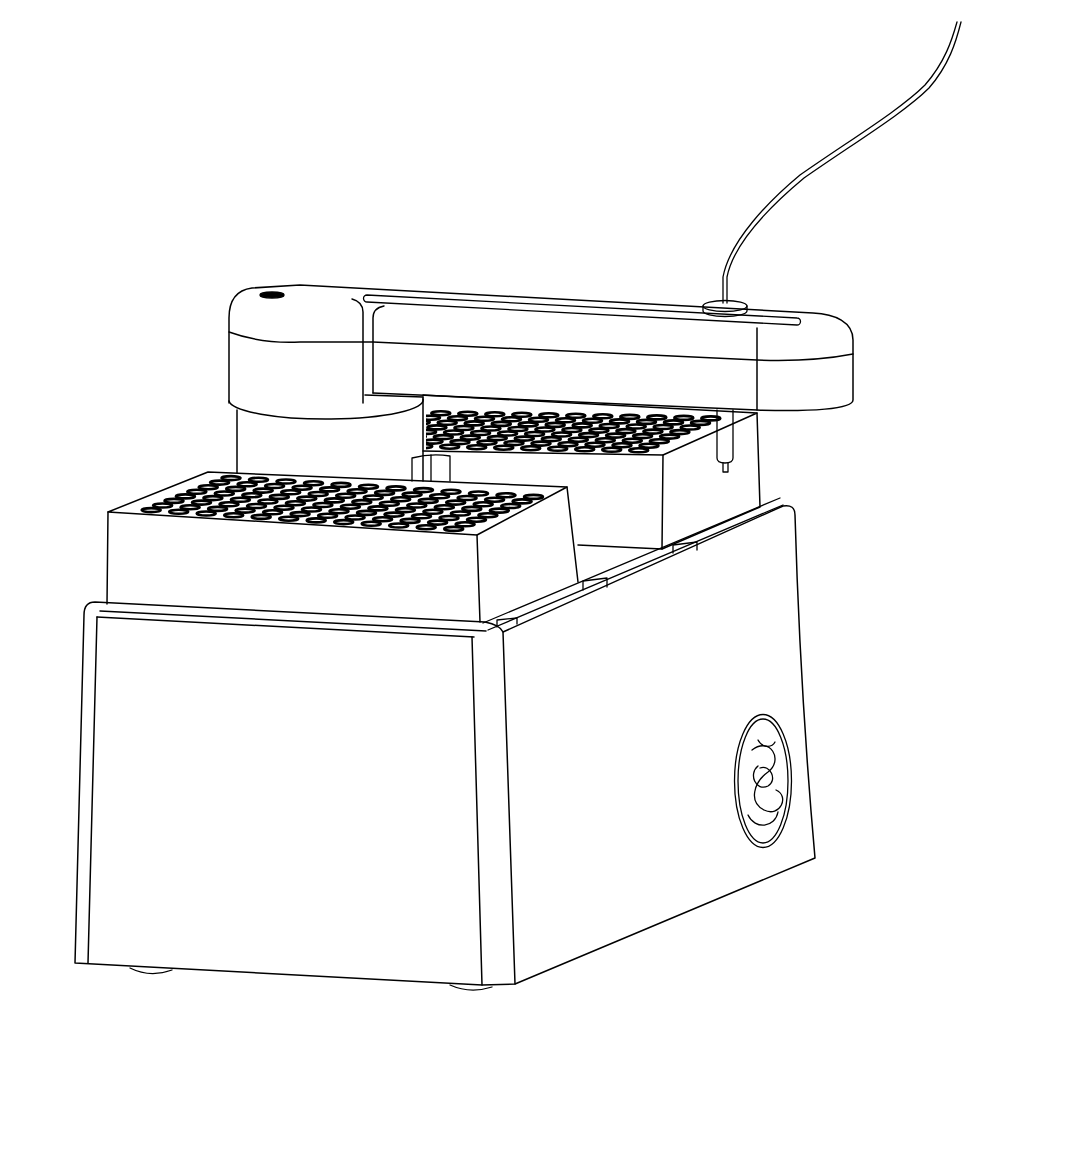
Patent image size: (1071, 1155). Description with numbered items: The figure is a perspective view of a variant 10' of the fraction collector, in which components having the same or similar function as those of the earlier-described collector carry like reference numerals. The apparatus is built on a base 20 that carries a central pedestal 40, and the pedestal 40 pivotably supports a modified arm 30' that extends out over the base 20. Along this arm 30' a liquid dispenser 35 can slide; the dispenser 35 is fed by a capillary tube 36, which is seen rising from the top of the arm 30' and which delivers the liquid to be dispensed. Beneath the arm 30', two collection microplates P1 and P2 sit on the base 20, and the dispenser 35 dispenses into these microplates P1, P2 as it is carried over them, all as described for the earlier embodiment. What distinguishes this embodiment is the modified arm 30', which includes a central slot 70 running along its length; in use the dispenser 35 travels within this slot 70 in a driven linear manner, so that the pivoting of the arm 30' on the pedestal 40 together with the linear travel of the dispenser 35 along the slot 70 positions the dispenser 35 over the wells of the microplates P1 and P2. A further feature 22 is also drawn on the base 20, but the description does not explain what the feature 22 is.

The liquid handling system 10' is at (501, 574).
The arm 30' is at (595, 247).
The slot 70 is at (604, 313).
The cable 36 is at (810, 170).
The rotary column 40 is at (247, 440).
The pipette 35 is at (727, 452).
The first plate P1 is at (120, 565).
The second plate P2 is at (747, 482).
The rail 22 is at (680, 570).
The base 20 is at (290, 953).